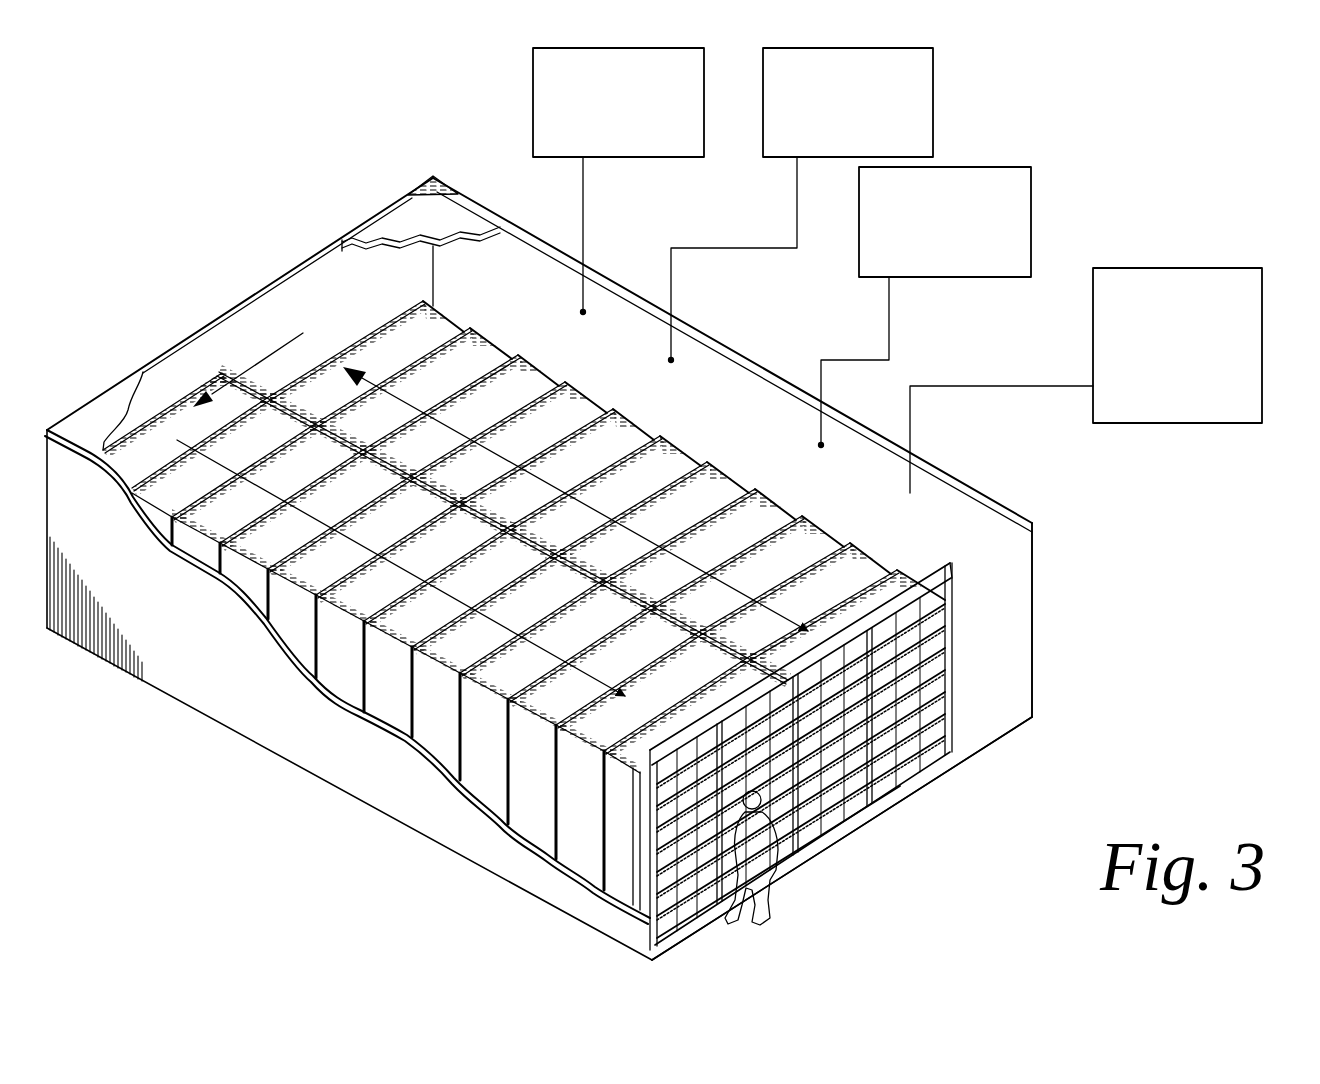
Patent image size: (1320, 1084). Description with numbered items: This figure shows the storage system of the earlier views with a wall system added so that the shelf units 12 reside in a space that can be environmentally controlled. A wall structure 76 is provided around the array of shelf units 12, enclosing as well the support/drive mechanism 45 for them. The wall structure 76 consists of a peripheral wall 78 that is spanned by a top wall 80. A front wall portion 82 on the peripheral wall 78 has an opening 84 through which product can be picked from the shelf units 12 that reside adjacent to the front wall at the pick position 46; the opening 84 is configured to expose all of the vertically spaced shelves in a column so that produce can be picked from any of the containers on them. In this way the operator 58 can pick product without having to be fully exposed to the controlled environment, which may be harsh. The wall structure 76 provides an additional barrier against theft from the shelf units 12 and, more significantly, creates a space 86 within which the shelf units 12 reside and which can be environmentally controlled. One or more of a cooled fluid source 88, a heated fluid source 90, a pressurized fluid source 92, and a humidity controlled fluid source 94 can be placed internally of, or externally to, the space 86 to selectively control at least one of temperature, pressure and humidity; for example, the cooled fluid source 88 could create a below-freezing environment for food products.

The shelf units 12 is at (524, 605).
The support/drive mechanism 45 is at (915, 781).
The pick position 46 is at (909, 598).
The operator 58 is at (757, 847).
The wall structure 76 is at (987, 487).
The peripheral wall 78 is at (1010, 599).
The top wall 80 is at (440, 205).
The front wall portion 82 is at (1015, 702).
The opening 84 is at (938, 675).
The space 86 is at (712, 402).
The cooled fluid source 88 is at (618, 181).
The heated fluid source 90 is at (925, 307).
The pressurized fluid source 92 is at (801, 205).
The humidity controlled fluid source 94 is at (1086, 380).